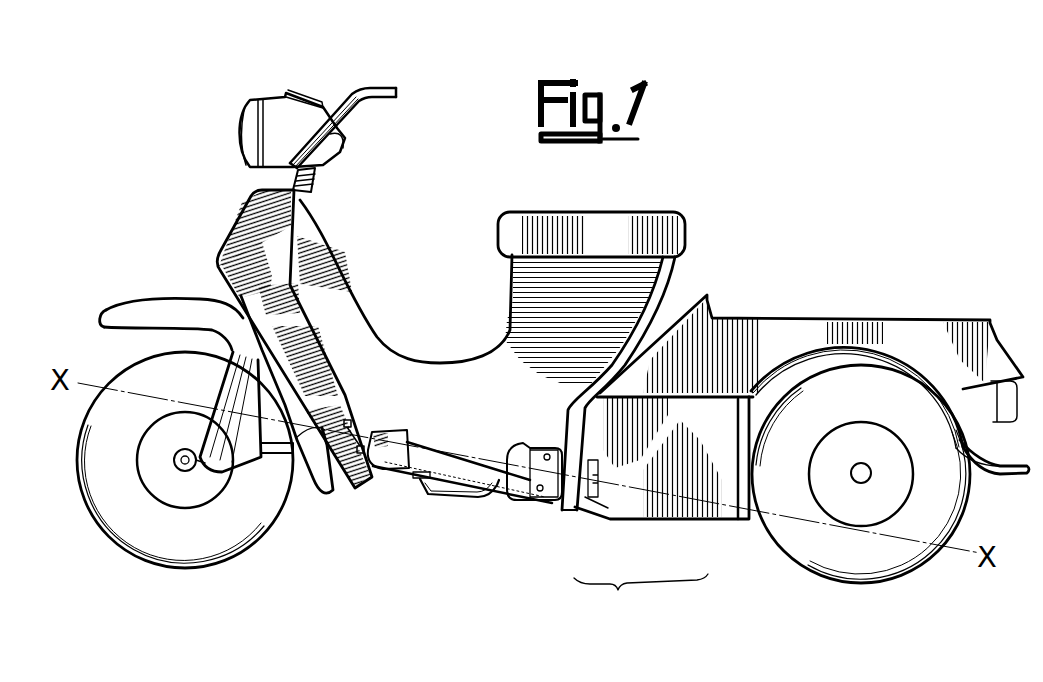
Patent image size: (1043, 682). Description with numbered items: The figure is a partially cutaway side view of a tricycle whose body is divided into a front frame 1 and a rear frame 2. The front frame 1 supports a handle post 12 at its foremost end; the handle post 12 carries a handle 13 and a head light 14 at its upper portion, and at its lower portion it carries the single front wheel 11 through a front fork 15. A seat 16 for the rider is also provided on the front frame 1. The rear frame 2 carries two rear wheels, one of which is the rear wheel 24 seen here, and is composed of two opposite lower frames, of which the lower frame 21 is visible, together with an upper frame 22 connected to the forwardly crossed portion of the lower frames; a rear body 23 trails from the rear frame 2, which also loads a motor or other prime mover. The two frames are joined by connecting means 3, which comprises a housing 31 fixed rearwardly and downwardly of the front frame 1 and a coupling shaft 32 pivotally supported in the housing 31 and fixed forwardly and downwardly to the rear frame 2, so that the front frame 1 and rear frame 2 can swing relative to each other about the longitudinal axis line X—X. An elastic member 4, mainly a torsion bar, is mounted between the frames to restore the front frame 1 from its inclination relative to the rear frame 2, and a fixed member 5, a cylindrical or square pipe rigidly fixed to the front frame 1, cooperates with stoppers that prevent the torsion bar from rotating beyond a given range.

The front frame 1 is at (347, 300).
The rear frame 2 is at (641, 599).
The connecting means 3 is at (515, 497).
The elastic member 4 is at (387, 438).
The fixed member 5 is at (363, 438).
The front wheel 11 is at (257, 543).
The handle post 12 is at (318, 172).
The handle 13 is at (373, 88).
The head light 14 is at (268, 107).
The front fork 15 is at (253, 472).
The seat 16 is at (592, 223).
The lower frame 21 is at (605, 506).
The upper frame 22 is at (578, 492).
The rear body 23 is at (788, 330).
The rear wheel 24 is at (795, 548).
The housing 31 is at (532, 485).
The coupling shaft 32 is at (567, 492).